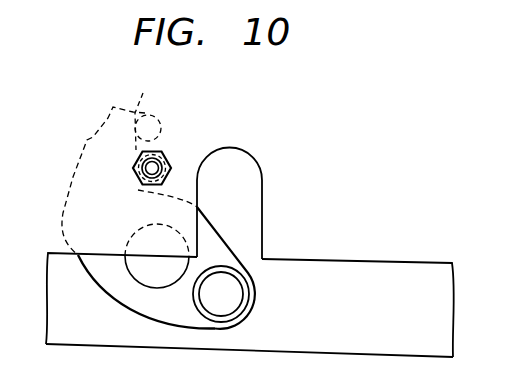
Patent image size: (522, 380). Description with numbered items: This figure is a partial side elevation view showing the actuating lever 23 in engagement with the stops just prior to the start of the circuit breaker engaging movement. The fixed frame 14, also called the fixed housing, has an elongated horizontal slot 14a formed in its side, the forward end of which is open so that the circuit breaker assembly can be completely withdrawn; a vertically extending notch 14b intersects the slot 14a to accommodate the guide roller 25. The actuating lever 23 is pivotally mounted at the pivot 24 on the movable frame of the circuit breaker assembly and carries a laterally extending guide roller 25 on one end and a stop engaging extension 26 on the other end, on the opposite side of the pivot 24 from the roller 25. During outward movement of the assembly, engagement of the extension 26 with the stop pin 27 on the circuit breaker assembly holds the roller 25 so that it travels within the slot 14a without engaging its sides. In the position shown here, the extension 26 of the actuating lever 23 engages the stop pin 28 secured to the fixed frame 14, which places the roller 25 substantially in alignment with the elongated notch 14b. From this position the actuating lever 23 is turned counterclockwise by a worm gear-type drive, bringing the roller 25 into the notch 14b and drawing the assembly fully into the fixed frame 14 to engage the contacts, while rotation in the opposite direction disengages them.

The fixed frame 14 is at (364, 244).
The elongated horizontal slot 14a is at (137, 347).
The vertically extending notch 14b is at (262, 180).
The actuating lever 23 is at (123, 222).
The pivot 24 is at (137, 278).
The guide roller 25 is at (249, 291).
The stop engaging extension 26 is at (146, 111).
The stop pin 27 is at (161, 116).
The stop pin 28 is at (158, 156).